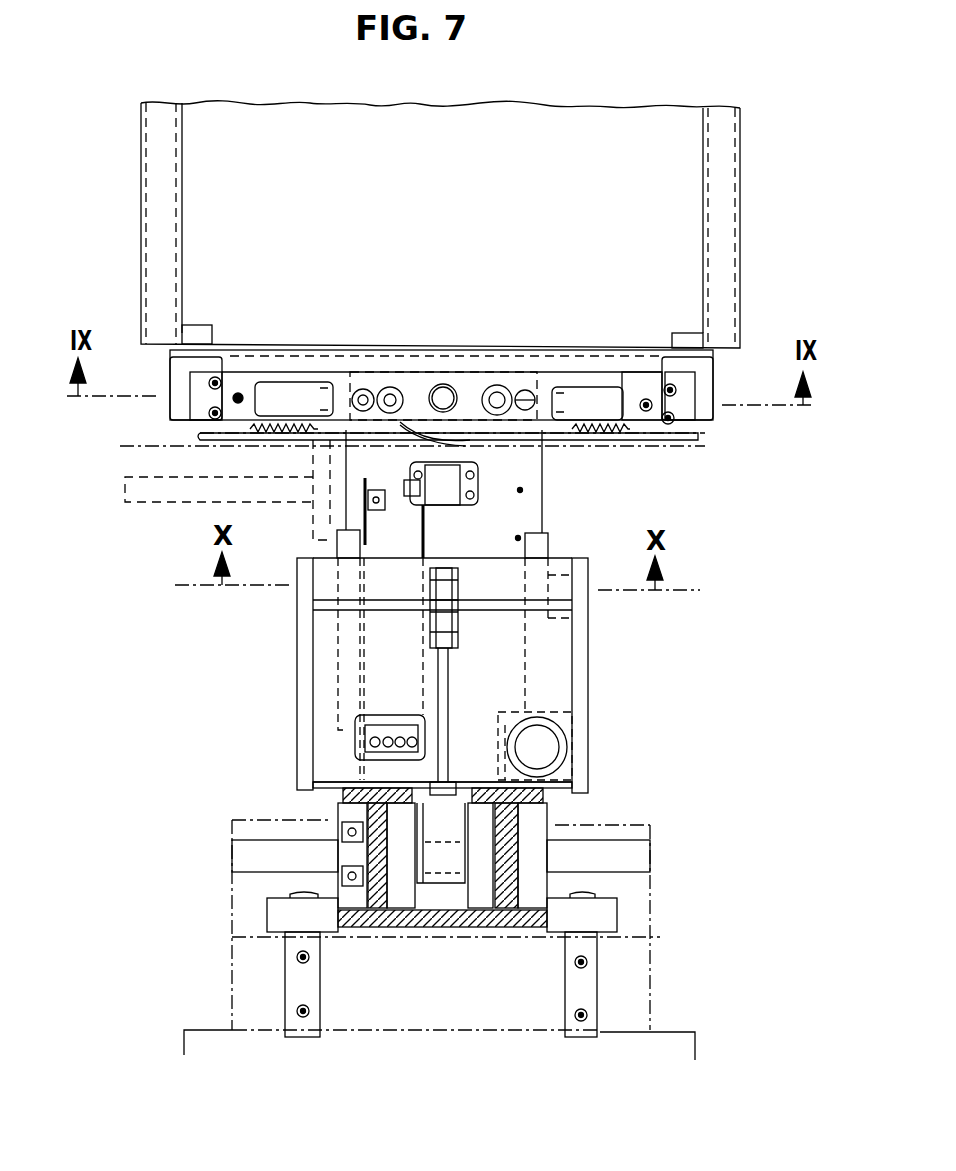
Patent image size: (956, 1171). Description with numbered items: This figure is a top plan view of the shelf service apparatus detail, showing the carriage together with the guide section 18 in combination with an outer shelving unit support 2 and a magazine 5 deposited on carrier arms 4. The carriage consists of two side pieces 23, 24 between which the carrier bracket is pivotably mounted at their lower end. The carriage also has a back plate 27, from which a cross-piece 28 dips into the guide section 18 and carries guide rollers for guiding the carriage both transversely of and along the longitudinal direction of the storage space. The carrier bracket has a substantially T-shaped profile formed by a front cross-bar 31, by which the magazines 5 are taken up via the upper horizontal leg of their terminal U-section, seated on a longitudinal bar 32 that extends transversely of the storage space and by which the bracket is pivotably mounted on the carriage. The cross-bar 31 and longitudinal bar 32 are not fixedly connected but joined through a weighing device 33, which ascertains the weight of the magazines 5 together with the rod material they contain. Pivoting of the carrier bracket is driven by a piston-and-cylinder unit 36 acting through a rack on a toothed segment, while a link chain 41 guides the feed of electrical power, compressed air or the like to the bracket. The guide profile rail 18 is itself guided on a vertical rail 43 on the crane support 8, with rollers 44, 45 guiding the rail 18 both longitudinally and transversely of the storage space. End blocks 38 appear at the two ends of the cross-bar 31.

The outer shelving unit support 2 is at (176, 490).
The carrier arm 4 is at (688, 450).
The magazine 5 is at (485, 133).
The crane support 8 is at (680, 1033).
The guide section 18 is at (470, 920).
The side piece 23 is at (307, 666).
The side piece 24 is at (580, 676).
The back plate 27 is at (330, 783).
The cross-piece 28 is at (432, 835).
The front cross-bar 31 is at (640, 380).
The longitudinal bar 32 is at (528, 470).
The weighing device 33 is at (268, 440).
The piston-and-cylinder unit 36 is at (548, 746).
The end blocks 38 is at (182, 373).
The link chain 41 is at (357, 742).
The vertical rail 43 is at (530, 1010).
The roller 44 is at (538, 828).
The roller 45 is at (270, 915).